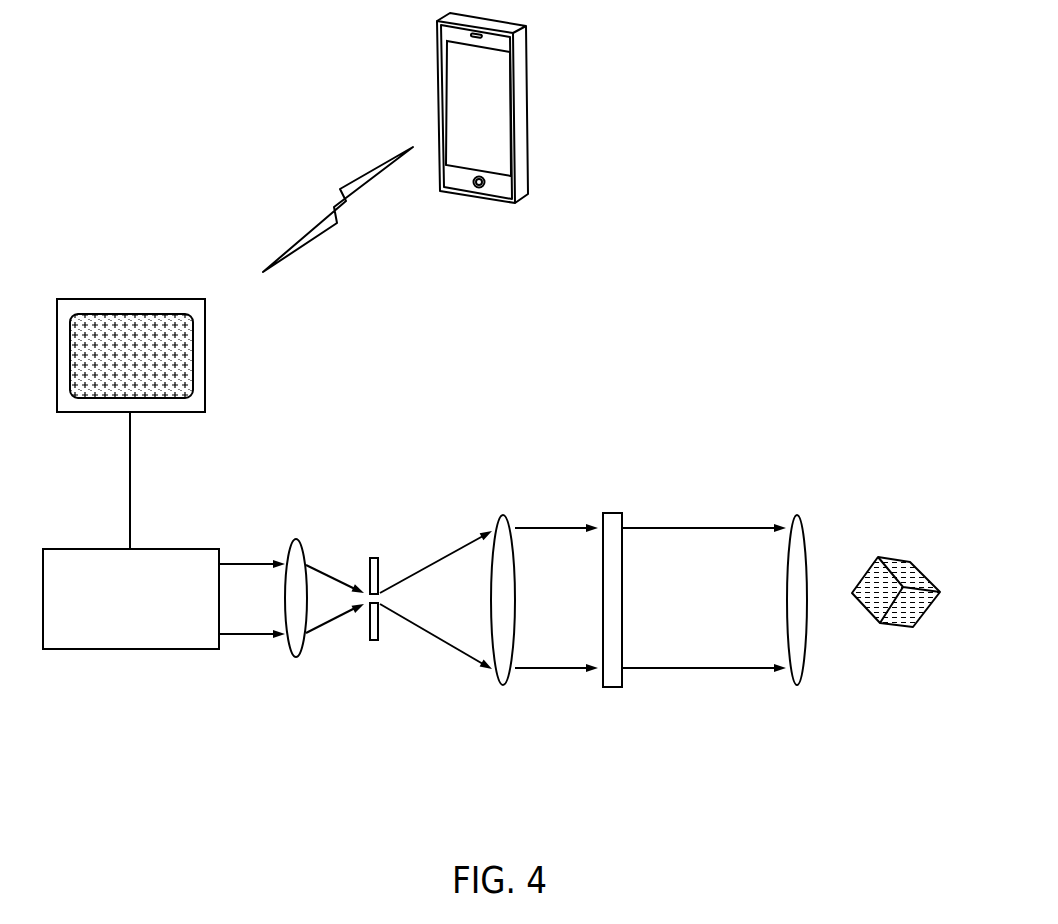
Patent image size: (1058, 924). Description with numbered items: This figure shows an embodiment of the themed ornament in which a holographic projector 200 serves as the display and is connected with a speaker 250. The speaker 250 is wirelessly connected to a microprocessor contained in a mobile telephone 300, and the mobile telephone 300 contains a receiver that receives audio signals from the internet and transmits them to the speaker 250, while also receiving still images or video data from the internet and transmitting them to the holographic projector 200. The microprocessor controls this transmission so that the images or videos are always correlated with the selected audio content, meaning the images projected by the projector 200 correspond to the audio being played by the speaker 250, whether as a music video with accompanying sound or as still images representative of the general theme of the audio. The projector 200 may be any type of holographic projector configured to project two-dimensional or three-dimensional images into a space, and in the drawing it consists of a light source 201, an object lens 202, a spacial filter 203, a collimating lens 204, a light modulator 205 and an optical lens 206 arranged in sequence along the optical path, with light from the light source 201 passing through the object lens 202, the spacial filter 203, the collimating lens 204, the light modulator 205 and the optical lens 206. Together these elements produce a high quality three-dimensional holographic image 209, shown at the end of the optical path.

The holographic projector 200 is at (336, 410).
The light source 201 is at (110, 637).
The object lens 202 is at (305, 548).
The spacial filter 203 is at (377, 563).
The collimating lens 204 is at (495, 520).
The light modulator 205 is at (597, 517).
The optical lens 206 is at (805, 520).
The 3D holographic image 209 is at (898, 557).
The speaker 250 is at (137, 307).
The mobile telephone 300 is at (497, 108).